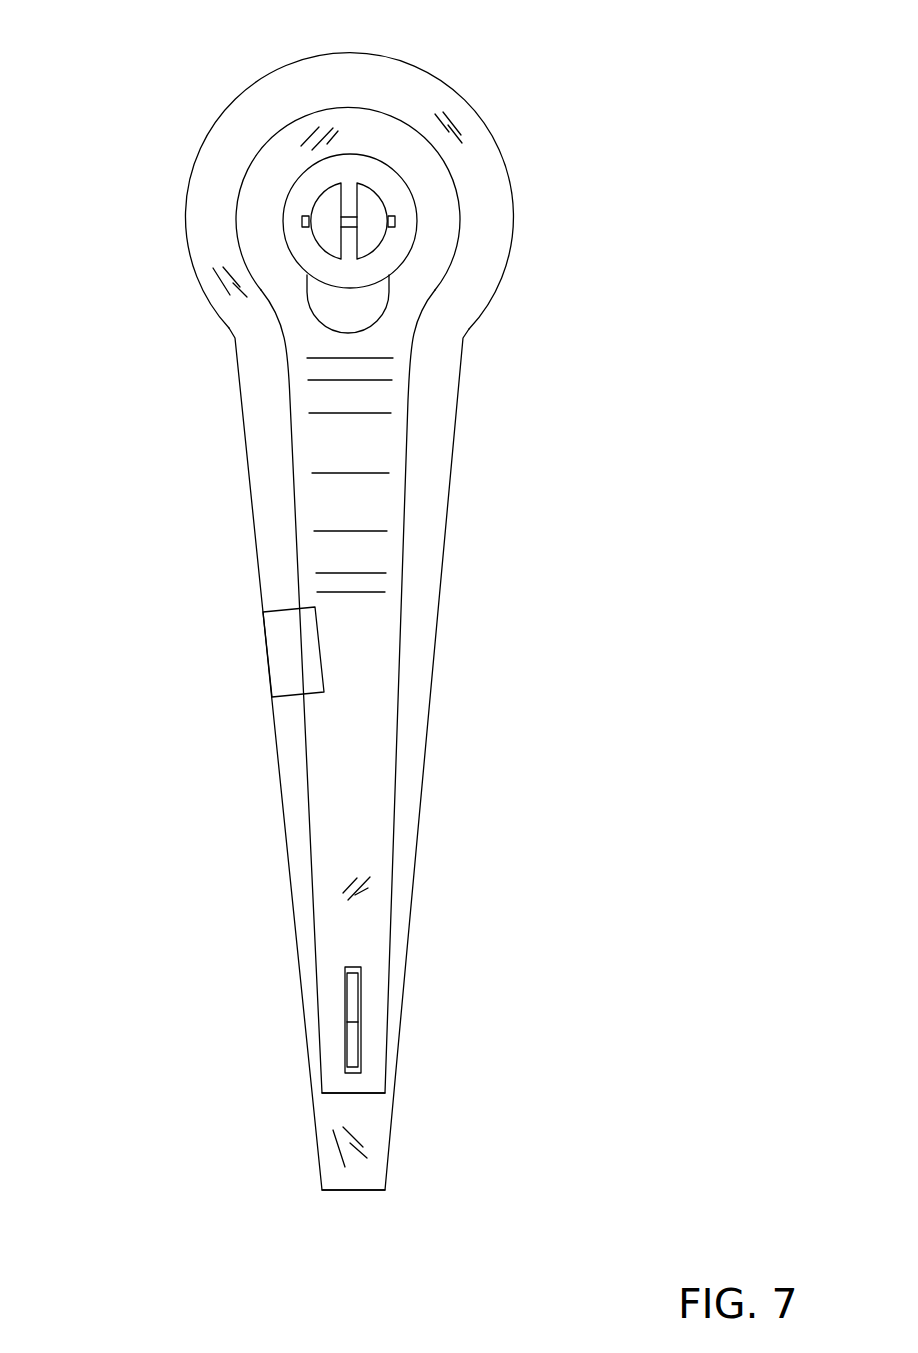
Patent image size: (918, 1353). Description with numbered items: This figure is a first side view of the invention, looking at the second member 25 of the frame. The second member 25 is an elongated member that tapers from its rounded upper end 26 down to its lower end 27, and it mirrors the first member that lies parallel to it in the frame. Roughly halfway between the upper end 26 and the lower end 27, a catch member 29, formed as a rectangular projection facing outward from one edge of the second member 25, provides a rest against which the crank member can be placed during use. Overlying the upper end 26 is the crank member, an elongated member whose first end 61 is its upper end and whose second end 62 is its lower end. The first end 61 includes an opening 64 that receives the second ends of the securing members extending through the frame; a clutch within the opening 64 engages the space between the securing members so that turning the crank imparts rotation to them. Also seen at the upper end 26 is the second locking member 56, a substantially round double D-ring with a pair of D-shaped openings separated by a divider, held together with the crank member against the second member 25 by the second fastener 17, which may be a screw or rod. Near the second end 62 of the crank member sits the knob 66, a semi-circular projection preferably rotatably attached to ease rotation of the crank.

The upper end 26 is at (325, 88).
The first end 61 is at (354, 132).
The second locking member 56 is at (313, 178).
The second fastener 17 is at (303, 220).
The opening 64 is at (352, 315).
The second member 25 is at (420, 598).
The catch member 29 is at (275, 653).
The knob 66 is at (360, 1017).
The second end 62 is at (363, 1085).
The lower end 27 is at (345, 1163).